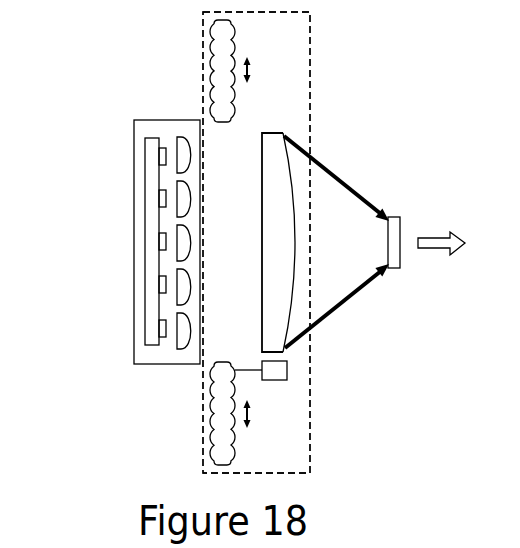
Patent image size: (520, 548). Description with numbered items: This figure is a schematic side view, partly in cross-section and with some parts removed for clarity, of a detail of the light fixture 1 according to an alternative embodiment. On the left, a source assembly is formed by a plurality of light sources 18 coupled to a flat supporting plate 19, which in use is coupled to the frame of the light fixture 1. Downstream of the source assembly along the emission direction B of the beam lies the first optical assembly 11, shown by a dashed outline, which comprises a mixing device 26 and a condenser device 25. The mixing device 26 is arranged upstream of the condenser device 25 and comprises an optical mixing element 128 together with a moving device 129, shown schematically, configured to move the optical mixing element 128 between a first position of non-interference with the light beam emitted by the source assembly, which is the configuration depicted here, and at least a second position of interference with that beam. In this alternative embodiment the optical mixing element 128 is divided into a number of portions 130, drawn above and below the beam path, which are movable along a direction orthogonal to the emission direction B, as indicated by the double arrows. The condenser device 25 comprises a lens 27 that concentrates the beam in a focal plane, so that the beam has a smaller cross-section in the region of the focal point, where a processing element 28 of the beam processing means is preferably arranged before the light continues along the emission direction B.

The light fixture 1 is at (118, 100).
The first optical assembly 11 is at (310, 100).
The light sources 18 is at (172, 173).
The supporting plate 19 is at (150, 338).
The condenser device 25 is at (304, 135).
The mixing device 26 is at (270, 33).
The lens 27 is at (287, 198).
The processing element 28 is at (400, 260).
The optical mixing element 128 is at (245, 438).
The moving device 129 is at (288, 371).
The portions 130 is at (212, 43).
The emission direction B is at (458, 238).